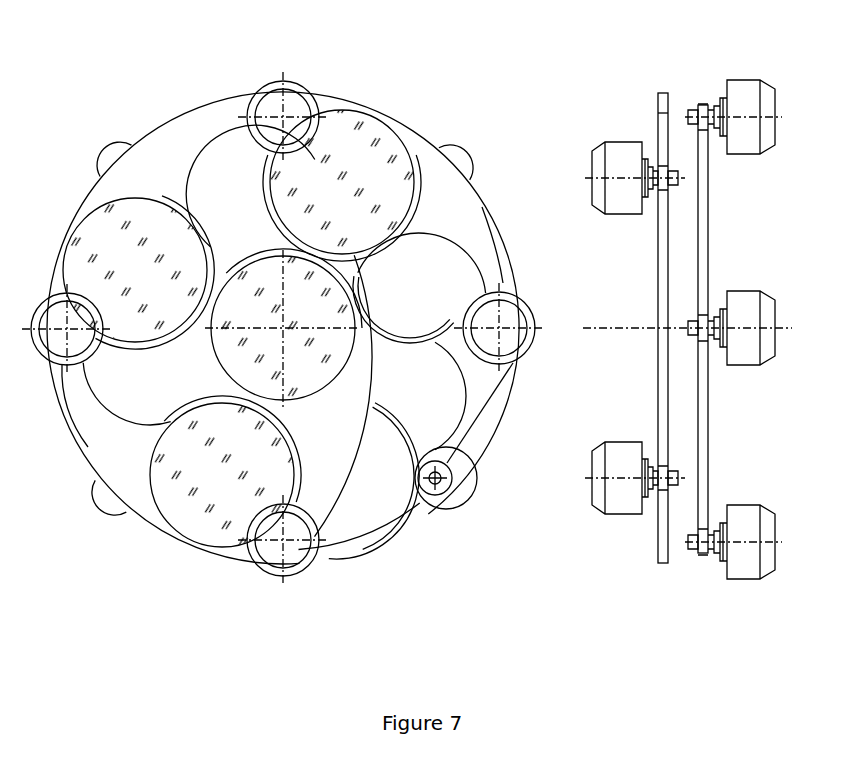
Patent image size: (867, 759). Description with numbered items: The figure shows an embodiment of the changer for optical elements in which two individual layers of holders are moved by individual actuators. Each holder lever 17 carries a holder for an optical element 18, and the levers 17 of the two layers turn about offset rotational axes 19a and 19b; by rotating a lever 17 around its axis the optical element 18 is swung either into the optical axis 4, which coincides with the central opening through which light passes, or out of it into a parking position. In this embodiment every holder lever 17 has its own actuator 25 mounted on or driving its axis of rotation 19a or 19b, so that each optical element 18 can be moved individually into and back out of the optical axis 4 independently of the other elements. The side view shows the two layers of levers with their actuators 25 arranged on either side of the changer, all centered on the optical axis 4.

The holder lever 17 is at (165, 160).
The optical element 18 is at (375, 492).
The rotational axis of holder lever (first layer) 19a is at (283, 117).
The rotational axis of holder lever (second layer) 19b is at (440, 487).
The individual actuator 25 is at (625, 160).
The optical axis 4 is at (623, 327).